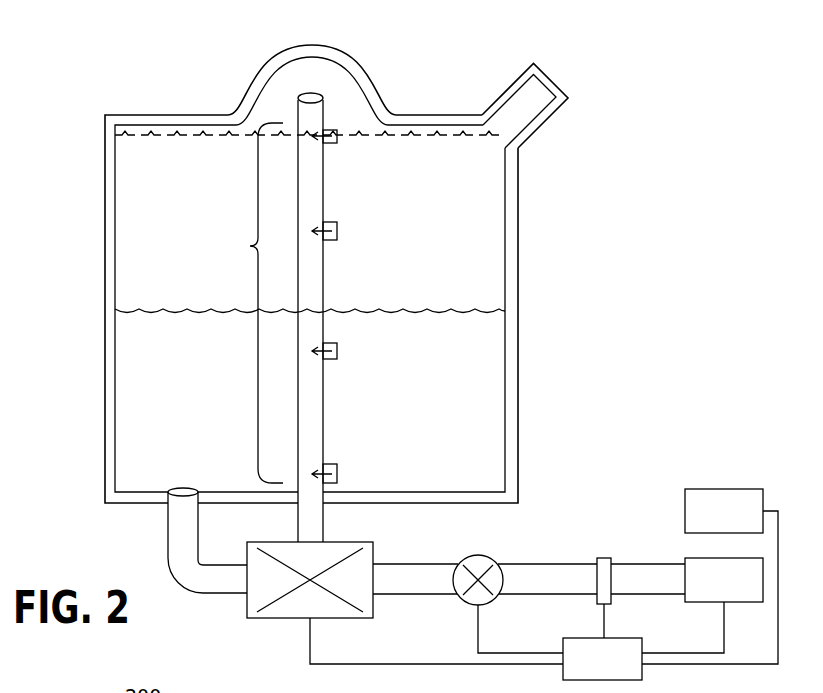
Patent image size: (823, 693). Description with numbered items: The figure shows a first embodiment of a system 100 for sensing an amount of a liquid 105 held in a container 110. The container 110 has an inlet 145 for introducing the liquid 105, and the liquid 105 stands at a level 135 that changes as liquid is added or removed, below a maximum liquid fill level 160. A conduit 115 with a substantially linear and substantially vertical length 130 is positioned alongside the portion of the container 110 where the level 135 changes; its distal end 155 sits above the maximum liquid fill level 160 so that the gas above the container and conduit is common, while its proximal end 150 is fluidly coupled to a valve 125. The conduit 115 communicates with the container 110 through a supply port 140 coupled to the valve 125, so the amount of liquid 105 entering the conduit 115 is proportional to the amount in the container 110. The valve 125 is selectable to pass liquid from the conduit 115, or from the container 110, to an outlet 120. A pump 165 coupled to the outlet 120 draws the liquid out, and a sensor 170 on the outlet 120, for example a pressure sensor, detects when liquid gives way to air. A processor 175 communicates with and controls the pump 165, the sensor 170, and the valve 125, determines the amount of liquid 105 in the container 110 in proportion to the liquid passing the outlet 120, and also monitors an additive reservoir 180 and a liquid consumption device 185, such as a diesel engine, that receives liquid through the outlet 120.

The system 100 is at (94, 74).
The liquid 105 is at (130, 343).
The container 110 is at (105, 393).
The conduit 115 is at (302, 277).
The outlet 120 is at (437, 562).
The valve 125 is at (363, 618).
The length 130 is at (243, 303).
The level 135 is at (176, 311).
The supply port 140 is at (168, 548).
The inlet 145 is at (518, 79).
The proximal end 150 is at (325, 515).
The distal end 155 is at (302, 93).
The maximum liquid fill level 160 is at (117, 137).
The pump 165 is at (491, 559).
The sensor 170 is at (597, 600).
The processor 175 is at (602, 659).
The additive reservoir 180 is at (724, 511).
The liquid consumption device 185 is at (724, 580).